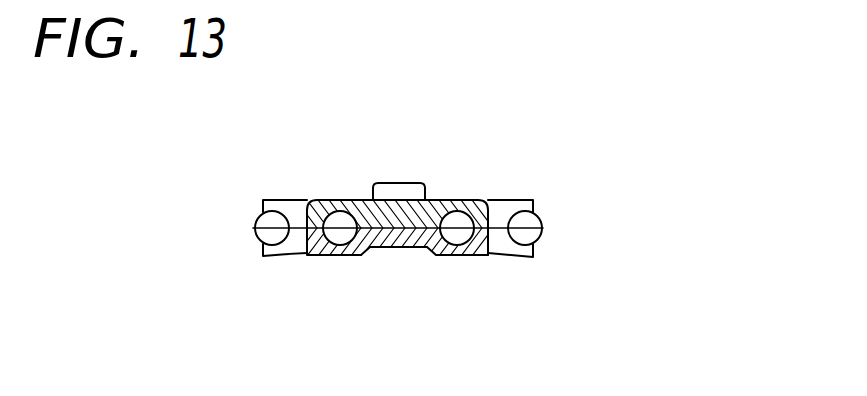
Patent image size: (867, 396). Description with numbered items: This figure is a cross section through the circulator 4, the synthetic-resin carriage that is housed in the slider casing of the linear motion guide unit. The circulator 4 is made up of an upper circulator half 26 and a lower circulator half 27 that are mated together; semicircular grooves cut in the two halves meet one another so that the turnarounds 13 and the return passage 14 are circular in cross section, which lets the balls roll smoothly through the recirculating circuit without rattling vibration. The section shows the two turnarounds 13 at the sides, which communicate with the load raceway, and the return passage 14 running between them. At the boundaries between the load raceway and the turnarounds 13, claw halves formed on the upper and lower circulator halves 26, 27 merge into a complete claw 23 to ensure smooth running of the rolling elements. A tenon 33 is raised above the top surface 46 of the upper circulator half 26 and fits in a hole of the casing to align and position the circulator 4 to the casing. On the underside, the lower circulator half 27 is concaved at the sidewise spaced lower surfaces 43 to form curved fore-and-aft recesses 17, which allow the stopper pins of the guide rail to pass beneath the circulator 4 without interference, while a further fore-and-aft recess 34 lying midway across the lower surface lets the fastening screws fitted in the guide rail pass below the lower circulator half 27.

The circulator 4 is at (437, 185).
The turnaround 13 is at (272, 216).
The return passage 14 is at (332, 205).
The fore-and-aft recess 17 is at (293, 255).
The claw 23 is at (256, 228).
The upper circulator half 26 is at (462, 205).
The lower circulator half 27 is at (470, 247).
The tenon 33 is at (388, 190).
The fore-and-aft recess 34 is at (395, 250).
The lower surface 43 is at (343, 252).
The top surface 46 is at (350, 210).